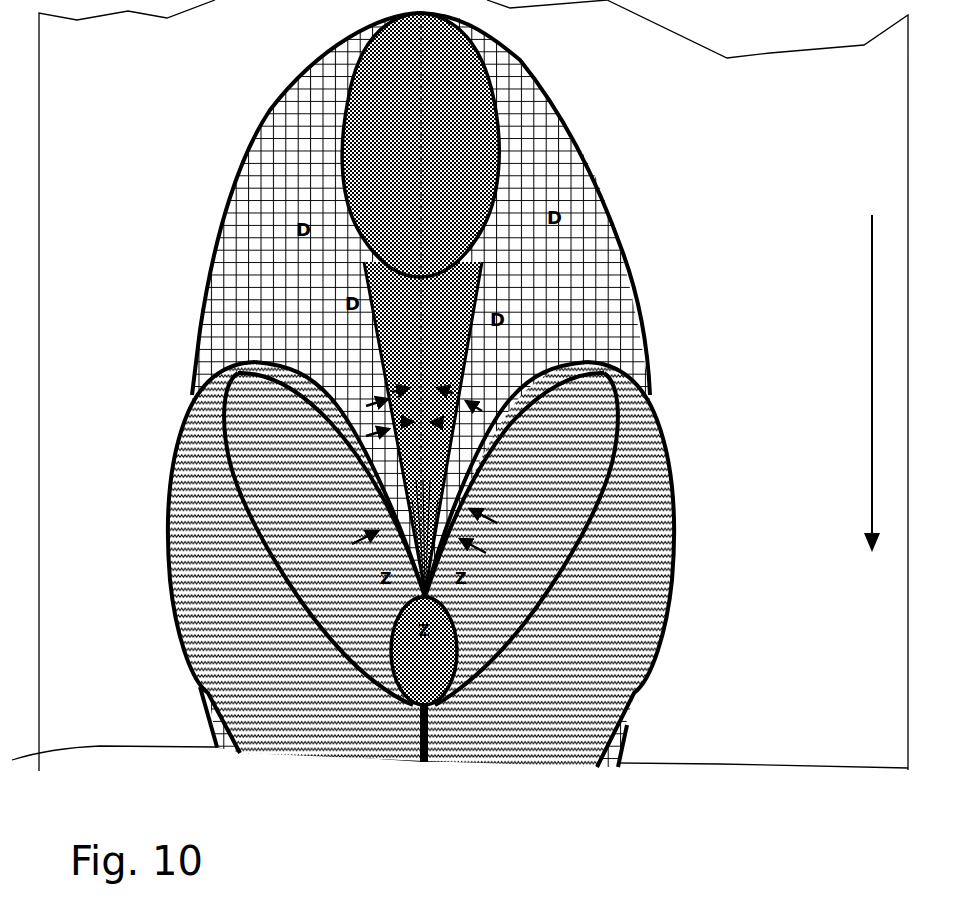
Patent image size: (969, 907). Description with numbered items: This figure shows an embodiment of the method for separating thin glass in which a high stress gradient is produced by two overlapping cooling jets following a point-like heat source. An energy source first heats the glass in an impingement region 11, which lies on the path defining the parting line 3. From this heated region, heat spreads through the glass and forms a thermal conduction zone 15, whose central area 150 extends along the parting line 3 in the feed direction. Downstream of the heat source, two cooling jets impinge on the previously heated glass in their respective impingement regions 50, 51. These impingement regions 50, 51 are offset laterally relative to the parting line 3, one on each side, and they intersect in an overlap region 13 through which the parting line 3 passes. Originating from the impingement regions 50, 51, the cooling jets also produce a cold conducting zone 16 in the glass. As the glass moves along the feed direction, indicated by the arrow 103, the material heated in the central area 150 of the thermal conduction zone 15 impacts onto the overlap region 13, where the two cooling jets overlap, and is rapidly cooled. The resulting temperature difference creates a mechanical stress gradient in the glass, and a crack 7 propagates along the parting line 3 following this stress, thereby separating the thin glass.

The parting line 3 is at (357, 230).
The crack 7 is at (430, 729).
The impingement region 11 is at (498, 128).
The overlap region 13 is at (390, 657).
The thermal conduction zone 15 is at (625, 262).
The cold conducting zone 16 is at (672, 440).
The impingement region 50 is at (250, 517).
The impingement region 51 is at (587, 532).
The direction of flow 103 is at (872, 215).
The central area 150 is at (478, 350).